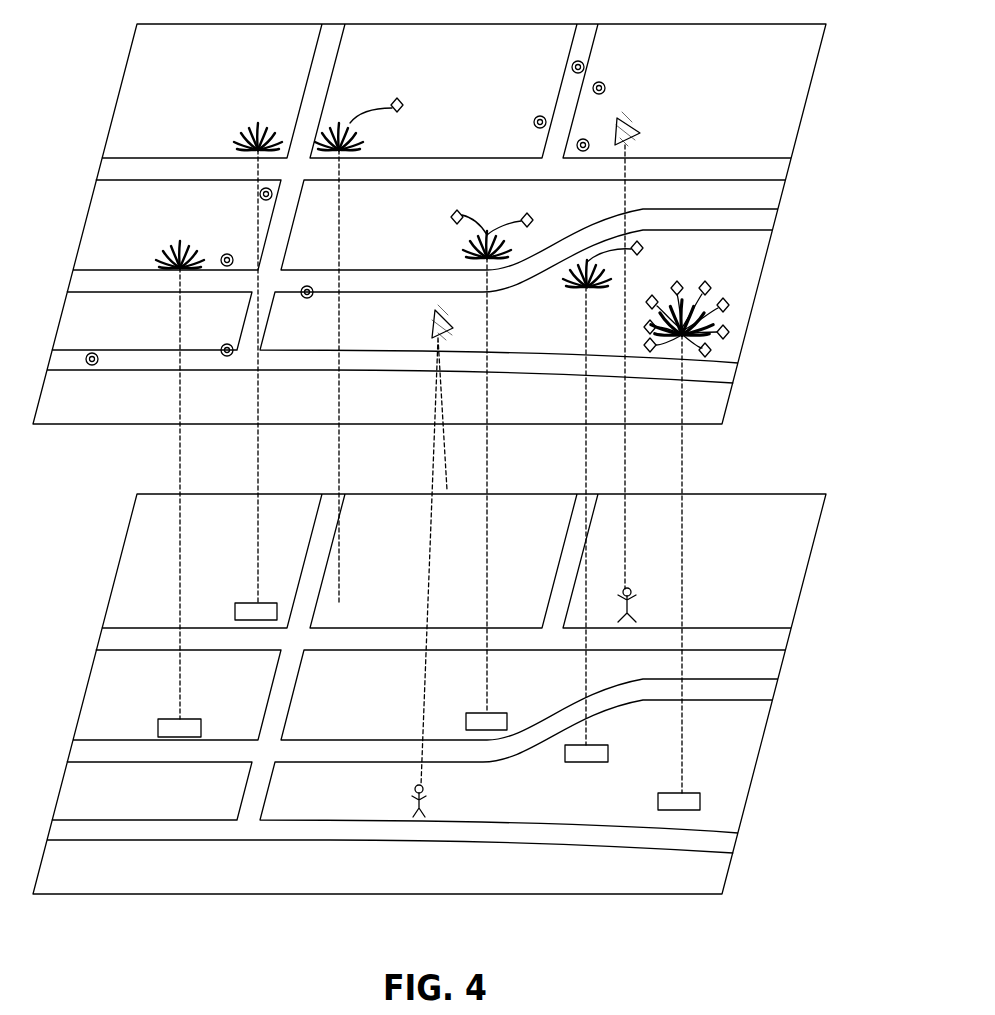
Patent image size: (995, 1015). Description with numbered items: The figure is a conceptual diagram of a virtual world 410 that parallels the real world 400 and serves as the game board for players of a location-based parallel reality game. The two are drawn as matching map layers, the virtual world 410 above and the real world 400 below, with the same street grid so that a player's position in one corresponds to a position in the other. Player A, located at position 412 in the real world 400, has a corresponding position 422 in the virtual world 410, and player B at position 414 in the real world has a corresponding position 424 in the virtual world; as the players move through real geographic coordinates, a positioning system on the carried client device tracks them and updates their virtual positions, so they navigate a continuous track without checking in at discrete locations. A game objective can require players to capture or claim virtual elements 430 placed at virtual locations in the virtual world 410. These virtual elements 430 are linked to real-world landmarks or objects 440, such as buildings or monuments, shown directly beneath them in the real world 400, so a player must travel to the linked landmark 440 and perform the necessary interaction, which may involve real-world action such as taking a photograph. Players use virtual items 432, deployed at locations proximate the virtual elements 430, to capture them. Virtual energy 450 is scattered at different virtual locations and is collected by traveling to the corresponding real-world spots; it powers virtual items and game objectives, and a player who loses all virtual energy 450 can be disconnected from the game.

The real world 400 is at (797, 603).
The virtual world 410 is at (795, 138).
The position of player A in the real world 412 is at (410, 789).
The position of player B in the real world 414 is at (632, 590).
The position of player A in the virtual world 422 is at (440, 333).
The position of player B in the virtual world 424 is at (640, 135).
The virtual elements 430 is at (257, 120).
The virtual items 432 is at (403, 103).
The real-world landmarks or objects 440 is at (250, 603).
The virtual energy 450 is at (92, 355).